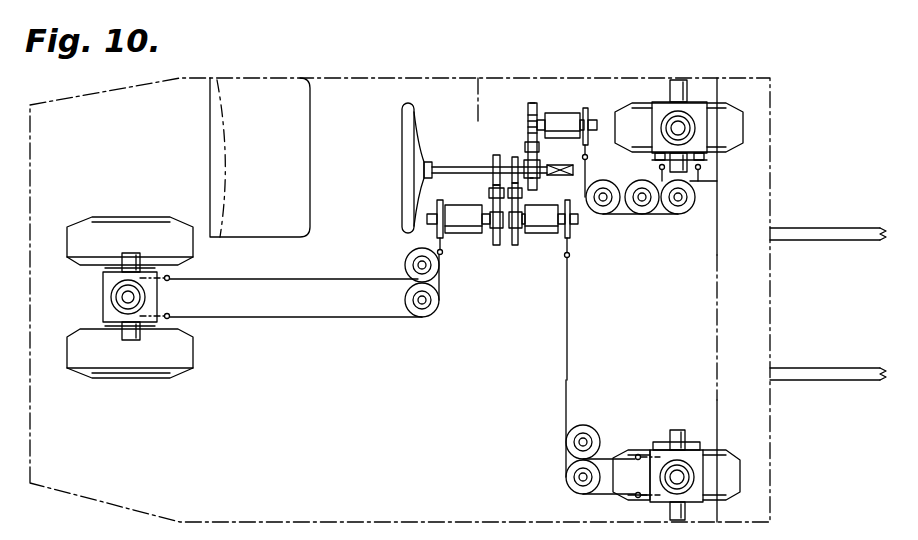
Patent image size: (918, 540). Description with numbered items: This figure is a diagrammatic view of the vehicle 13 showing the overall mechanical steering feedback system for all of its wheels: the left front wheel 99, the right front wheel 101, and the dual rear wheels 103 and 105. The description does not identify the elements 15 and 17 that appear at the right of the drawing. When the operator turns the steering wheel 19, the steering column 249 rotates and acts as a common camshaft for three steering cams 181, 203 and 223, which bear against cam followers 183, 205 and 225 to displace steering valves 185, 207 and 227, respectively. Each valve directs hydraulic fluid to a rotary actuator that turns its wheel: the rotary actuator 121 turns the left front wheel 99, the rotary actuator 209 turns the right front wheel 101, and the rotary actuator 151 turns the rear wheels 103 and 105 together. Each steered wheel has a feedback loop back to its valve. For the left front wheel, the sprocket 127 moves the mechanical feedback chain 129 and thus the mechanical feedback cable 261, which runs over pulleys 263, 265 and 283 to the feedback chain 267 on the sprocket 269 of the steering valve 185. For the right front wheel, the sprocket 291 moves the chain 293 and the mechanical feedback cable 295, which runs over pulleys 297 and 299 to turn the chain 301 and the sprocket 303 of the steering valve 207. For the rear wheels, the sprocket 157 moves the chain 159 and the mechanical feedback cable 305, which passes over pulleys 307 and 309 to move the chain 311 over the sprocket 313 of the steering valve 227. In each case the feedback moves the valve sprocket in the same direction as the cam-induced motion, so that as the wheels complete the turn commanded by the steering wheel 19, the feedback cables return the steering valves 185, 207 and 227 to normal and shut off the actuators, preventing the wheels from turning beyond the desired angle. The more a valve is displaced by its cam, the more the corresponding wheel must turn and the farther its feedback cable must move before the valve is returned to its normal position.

The vehicle 13 is at (384, 77).
The rear arm 15 is at (830, 381).
The front arm 17 is at (808, 228).
The steering wheel 19 is at (402, 120).
The left front wheel 99 is at (735, 106).
The right front wheel 101 is at (722, 495).
The dual rear wheel 103 is at (108, 202).
The dual rear wheel 105 is at (112, 378).
The rotary actuator 121 is at (683, 100).
The sprocket 127 is at (668, 100).
The mechanical feedback chain 129 is at (705, 160).
The rotary actuator 151 is at (134, 338).
The sprocket 157 is at (103, 292).
The chain 159 is at (166, 283).
The steering cam 181 is at (533, 178).
The cam follower 183 is at (530, 103).
The steering valve 185 is at (562, 108).
The steering cam 203 is at (530, 142).
The cam follower 205 is at (515, 245).
The steering valve 207 is at (540, 226).
The rotary actuator 209 is at (672, 430).
The steering cam 223 is at (520, 130).
The cam follower 225 is at (497, 244).
The steering valve 227 is at (458, 208).
The steering column 249 is at (449, 166).
The mechanical feedback cable 261 is at (717, 186).
The cable pulley 263 is at (690, 213).
The cable pulley 265 is at (645, 213).
The feedback chain 267 is at (588, 156).
The sprocket 269 is at (588, 110).
The pulley 283 is at (606, 213).
The sprocket 291 is at (690, 450).
The chain 293 is at (640, 455).
The mechanical feedback cable 295 is at (562, 384).
The pulley 297 is at (566, 490).
The pulley 299 is at (566, 442).
The chain 301 is at (564, 260).
The sprocket 303 is at (570, 240).
The mechanical feedback cable 305 is at (270, 318).
The pulley 307 is at (424, 318).
The pulley 309 is at (405, 263).
The chain 311 is at (437, 246).
The sprocket 313 is at (437, 206).